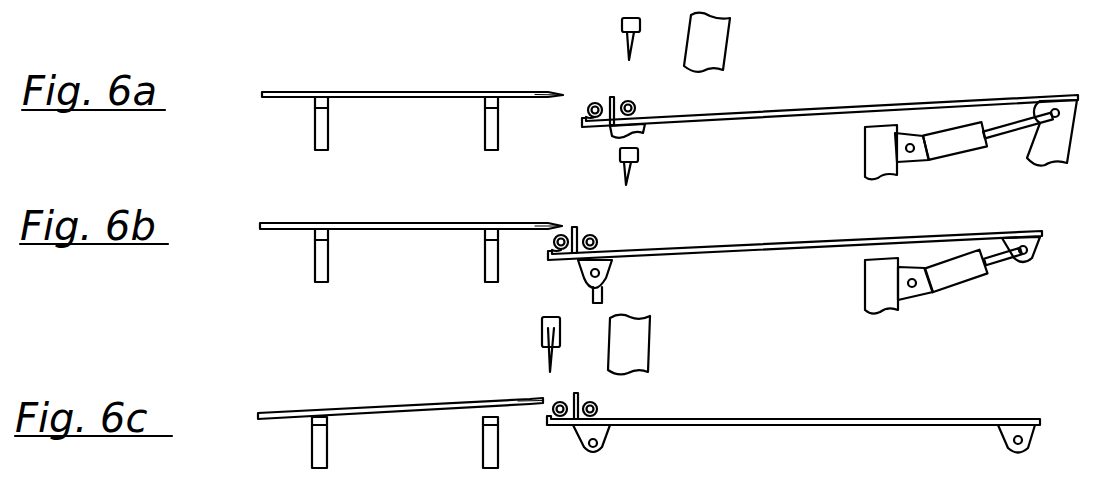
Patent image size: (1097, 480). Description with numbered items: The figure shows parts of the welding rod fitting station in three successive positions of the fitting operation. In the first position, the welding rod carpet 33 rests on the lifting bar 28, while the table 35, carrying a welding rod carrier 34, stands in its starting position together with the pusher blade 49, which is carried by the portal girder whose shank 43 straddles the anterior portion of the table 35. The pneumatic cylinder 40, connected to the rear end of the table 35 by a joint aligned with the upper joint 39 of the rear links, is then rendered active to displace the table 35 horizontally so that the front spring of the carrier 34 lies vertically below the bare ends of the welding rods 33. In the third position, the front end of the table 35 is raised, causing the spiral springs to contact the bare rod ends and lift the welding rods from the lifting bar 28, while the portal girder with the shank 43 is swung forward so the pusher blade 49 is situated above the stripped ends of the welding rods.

In FIG. 6A, the lifting bar 28 is at (485, 122).
In FIG. 6C, the lifting bar 28 is at (483, 436).
In FIG. 6A, the welding rod carpet 33 is at (371, 91).
In FIG. 6B, the welding rod carpet 33 is at (381, 222).
In FIG. 6A, the welding rod carrier 34 is at (615, 100).
In FIG. 6B, the welding rod carrier 34 is at (577, 228).
In FIG. 6A, the table 35 is at (815, 107).
In FIG. 6A, the upper joint 39 is at (1052, 108).
In FIG. 6A, the pneumatic cylinder 40 is at (963, 147).
In FIG. 6B, the pneumatic cylinder 40 is at (968, 277).
In FIG. 6A, the shank 43 is at (723, 37).
In FIG. 6C, the shank 43 is at (645, 334).
In FIG. 6A, the pusher blade 49 is at (621, 42).
In FIG. 6C, the pusher blade 49 is at (545, 355).